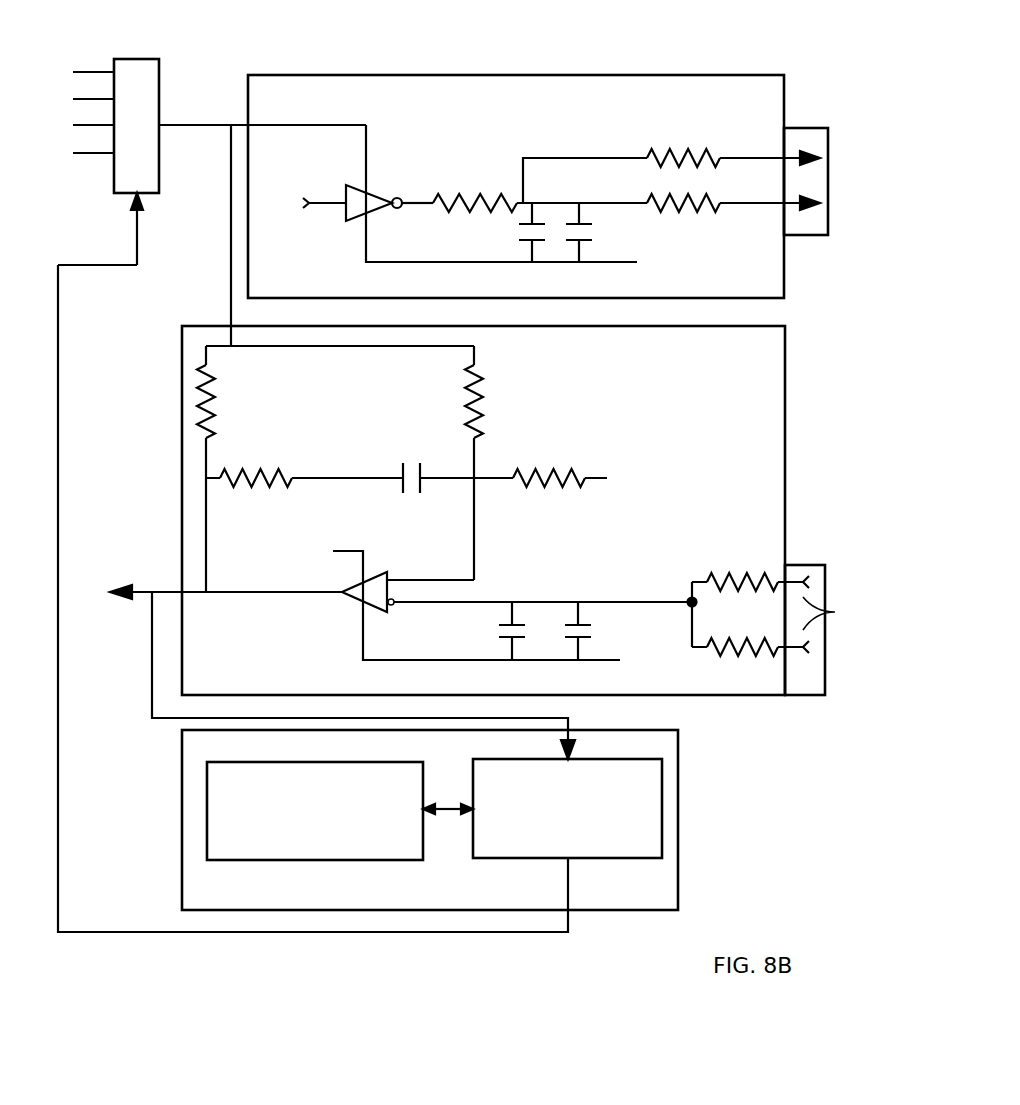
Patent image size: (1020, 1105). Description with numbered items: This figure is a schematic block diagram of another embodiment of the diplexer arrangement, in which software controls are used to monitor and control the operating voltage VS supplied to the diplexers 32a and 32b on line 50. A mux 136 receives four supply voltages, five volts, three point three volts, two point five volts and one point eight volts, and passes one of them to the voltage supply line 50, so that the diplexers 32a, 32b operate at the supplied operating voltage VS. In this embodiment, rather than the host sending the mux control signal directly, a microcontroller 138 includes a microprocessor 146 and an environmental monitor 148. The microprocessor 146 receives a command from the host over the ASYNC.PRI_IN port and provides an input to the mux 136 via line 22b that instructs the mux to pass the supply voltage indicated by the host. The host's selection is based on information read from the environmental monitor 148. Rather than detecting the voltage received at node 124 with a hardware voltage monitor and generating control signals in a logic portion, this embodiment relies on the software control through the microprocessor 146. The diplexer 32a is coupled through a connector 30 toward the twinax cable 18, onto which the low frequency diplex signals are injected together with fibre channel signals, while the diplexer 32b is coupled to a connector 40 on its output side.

The mux 136 is at (137, 59).
The voltage supply line 50 is at (181, 125).
The line 22b is at (137, 227).
The diplexer 32b is at (534, 186).
The connector 40 is at (790, 128).
The diplexer 32a is at (448, 510).
The node 124 is at (688, 597).
The connector 30 is at (797, 565).
The twinax cable 18 is at (835, 612).
The microcontroller 138 is at (430, 820).
The environmental monitor 148 is at (315, 811).
The microprocessor 146 is at (567, 808).